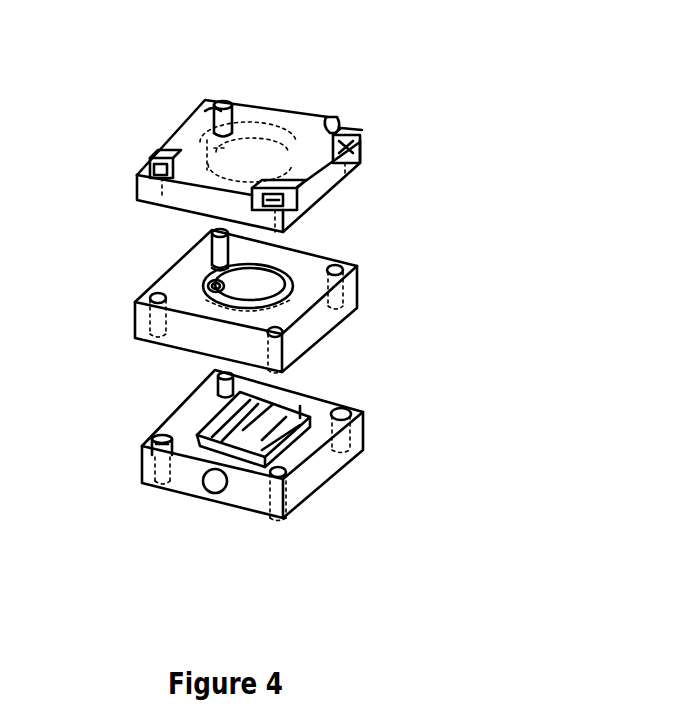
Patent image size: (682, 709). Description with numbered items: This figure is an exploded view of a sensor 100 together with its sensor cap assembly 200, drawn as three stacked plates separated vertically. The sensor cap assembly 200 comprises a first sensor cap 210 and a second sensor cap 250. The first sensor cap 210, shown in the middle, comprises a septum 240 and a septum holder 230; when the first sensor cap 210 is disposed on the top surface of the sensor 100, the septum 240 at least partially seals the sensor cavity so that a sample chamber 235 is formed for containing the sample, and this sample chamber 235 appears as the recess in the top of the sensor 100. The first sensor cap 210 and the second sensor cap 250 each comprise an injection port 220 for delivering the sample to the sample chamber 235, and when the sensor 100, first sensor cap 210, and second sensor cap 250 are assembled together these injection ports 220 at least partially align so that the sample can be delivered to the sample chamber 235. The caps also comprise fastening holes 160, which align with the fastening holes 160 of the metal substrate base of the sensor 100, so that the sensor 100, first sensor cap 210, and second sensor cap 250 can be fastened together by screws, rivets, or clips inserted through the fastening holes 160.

The sensor 100 is at (382, 428).
The fastening holes 160 is at (223, 102).
The sensor cap assembly 200 is at (508, 235).
The first sensor cap 210 is at (375, 291).
The injection port 220 is at (212, 113).
The septum holder 230 is at (207, 290).
The sample chamber 235 is at (222, 430).
The septum 240 is at (283, 281).
The second sensor cap 250 is at (382, 150).